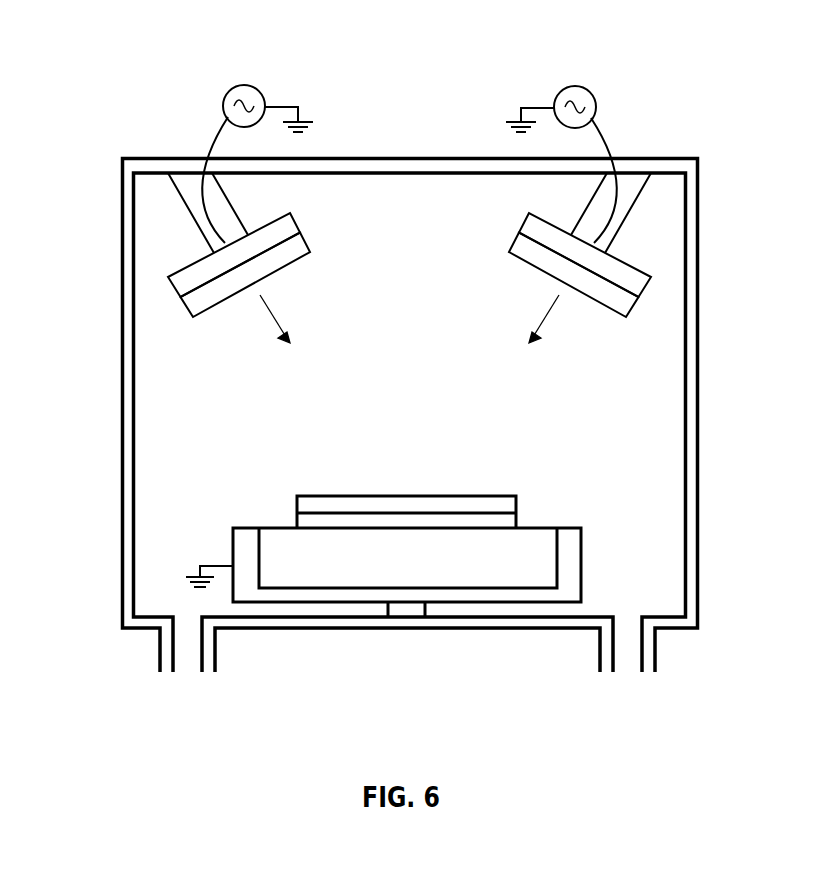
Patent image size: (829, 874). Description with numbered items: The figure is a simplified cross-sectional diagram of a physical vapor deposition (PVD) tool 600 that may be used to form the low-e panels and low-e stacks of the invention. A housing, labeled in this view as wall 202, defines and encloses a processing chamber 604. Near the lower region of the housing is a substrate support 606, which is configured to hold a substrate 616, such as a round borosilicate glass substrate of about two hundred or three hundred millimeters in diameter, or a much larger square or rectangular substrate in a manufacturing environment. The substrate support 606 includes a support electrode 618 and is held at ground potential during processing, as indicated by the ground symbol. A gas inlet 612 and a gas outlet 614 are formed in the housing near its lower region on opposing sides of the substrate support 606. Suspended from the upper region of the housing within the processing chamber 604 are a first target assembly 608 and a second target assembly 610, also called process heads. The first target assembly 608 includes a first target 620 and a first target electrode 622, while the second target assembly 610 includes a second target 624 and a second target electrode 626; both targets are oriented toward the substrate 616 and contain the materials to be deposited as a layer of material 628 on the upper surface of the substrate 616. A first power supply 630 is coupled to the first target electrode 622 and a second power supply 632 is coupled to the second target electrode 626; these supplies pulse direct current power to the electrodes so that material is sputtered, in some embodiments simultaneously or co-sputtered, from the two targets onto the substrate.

The physical vapor deposition tool 600 is at (95, 83).
The chamber body 202 is at (674, 157).
The processing chamber 604 is at (423, 410).
The substrate support 606 is at (242, 527).
The first target assembly 608 is at (168, 306).
The second target assembly 610 is at (652, 304).
The gas inlet 612 is at (185, 647).
The gas outlet 614 is at (630, 647).
The substrate 616 is at (303, 520).
The support electrode 618 is at (368, 567).
The first target 620 is at (312, 243).
The first target electrode 622 is at (292, 220).
The second target 624 is at (510, 243).
The second target electrode 626 is at (527, 222).
The layer of material 628 is at (507, 505).
The first power supply 630 is at (270, 85).
The second power supply 632 is at (548, 85).